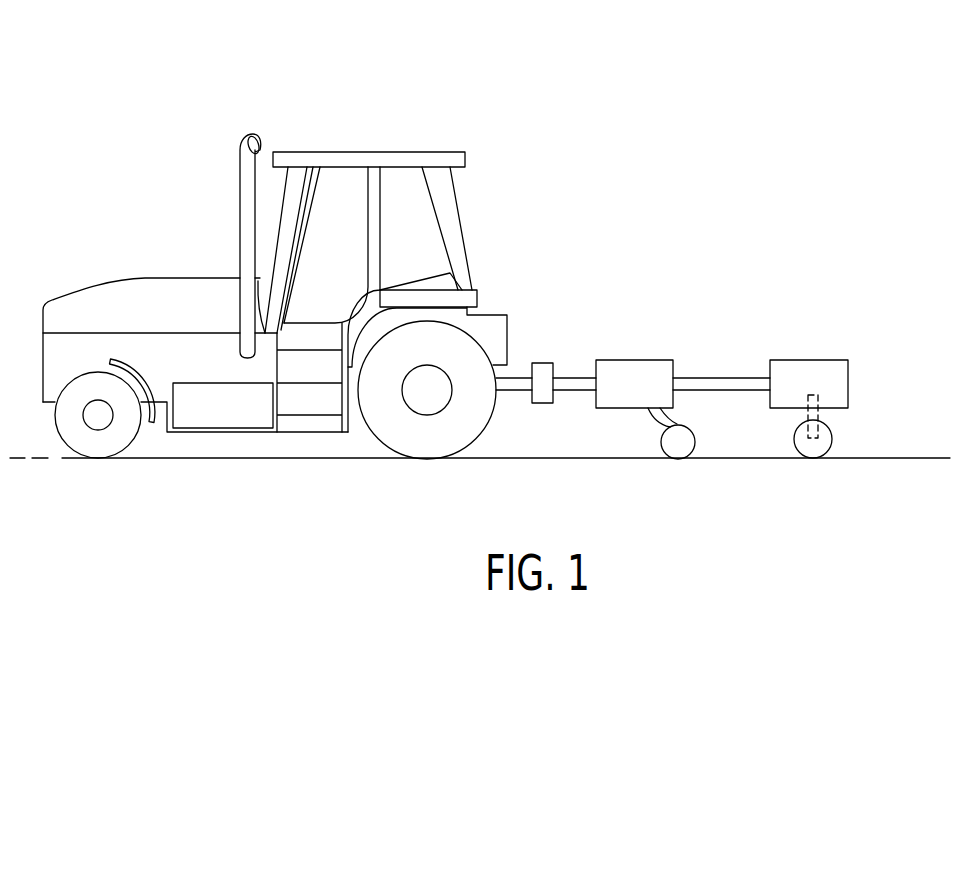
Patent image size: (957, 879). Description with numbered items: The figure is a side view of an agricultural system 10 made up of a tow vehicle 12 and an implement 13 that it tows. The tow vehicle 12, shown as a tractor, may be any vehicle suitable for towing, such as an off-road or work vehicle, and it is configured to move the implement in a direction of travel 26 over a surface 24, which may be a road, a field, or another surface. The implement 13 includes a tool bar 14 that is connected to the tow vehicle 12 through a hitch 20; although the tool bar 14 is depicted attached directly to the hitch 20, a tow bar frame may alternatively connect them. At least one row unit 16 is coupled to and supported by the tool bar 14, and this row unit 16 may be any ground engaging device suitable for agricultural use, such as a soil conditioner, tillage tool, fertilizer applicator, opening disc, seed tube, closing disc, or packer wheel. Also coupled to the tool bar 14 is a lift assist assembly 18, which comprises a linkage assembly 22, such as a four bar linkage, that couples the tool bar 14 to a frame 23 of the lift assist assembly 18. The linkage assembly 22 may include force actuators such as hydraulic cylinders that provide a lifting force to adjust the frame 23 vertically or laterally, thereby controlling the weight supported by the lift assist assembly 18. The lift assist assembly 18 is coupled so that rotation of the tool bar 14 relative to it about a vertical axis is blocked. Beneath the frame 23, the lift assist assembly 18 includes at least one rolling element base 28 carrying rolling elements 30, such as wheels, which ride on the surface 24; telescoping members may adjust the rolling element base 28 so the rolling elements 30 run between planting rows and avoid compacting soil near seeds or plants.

The agricultural system 10 is at (819, 161).
The tow vehicle 12 is at (172, 278).
The implement 13 is at (682, 290).
The tool bar 14 is at (637, 360).
The row unit 16 is at (644, 424).
The lift assist assembly 18 is at (857, 336).
The hitch 20 is at (540, 363).
The linkage assembly 22 is at (722, 378).
The frame 23 is at (808, 360).
The surface 24 is at (545, 458).
The direction of travel 26 is at (352, 101).
The rolling element base 28 is at (836, 420).
The rolling elements 30 is at (833, 438).